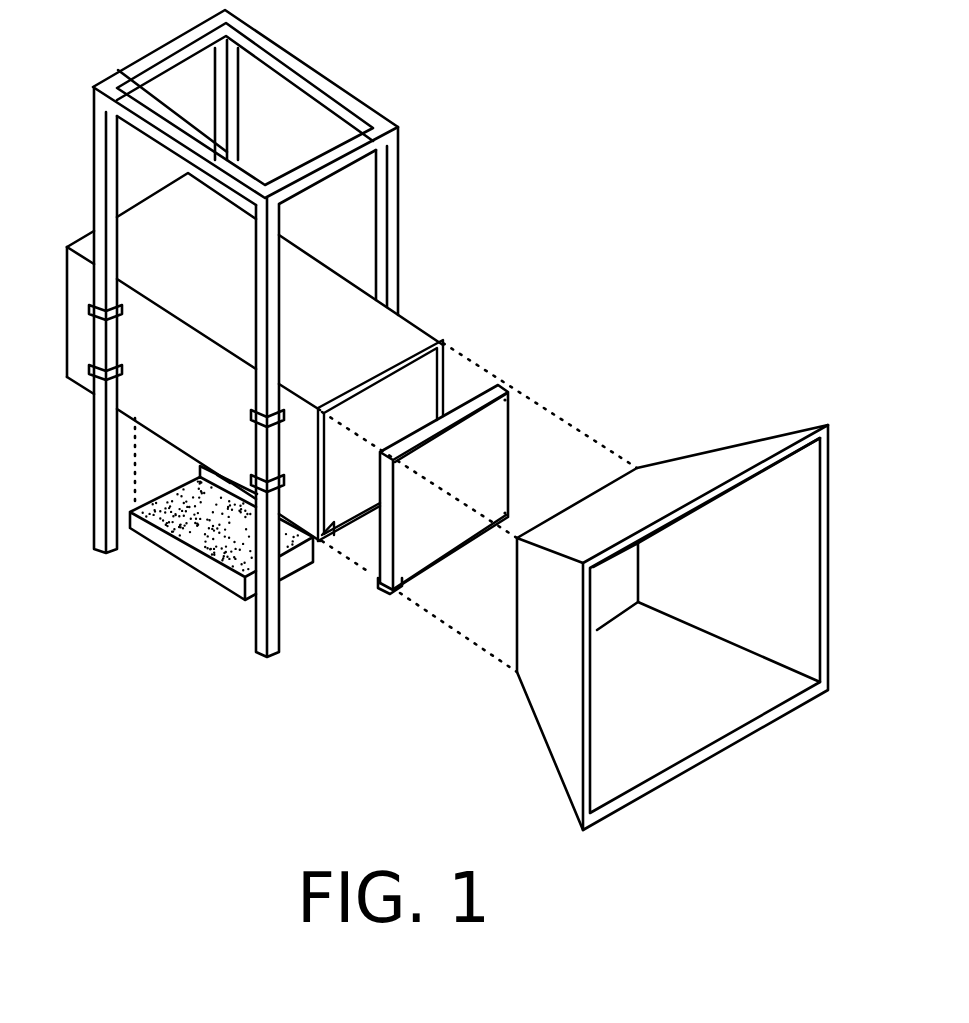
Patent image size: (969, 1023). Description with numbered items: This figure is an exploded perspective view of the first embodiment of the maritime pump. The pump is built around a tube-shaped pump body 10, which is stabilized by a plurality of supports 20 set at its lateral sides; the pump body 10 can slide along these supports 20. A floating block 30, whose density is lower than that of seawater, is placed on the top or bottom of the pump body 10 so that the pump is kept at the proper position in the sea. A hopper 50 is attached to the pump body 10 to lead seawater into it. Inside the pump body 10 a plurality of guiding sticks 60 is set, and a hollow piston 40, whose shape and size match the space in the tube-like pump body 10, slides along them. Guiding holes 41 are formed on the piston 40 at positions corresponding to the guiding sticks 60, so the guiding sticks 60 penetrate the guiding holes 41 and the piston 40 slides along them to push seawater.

The pump body 10 is at (315, 305).
The supports 20 is at (360, 105).
The floating block 30 is at (212, 532).
The piston 40 is at (463, 458).
The guiding holes 41 is at (505, 400).
The hopper 50 is at (680, 485).
The guiding sticks 60 is at (437, 343).